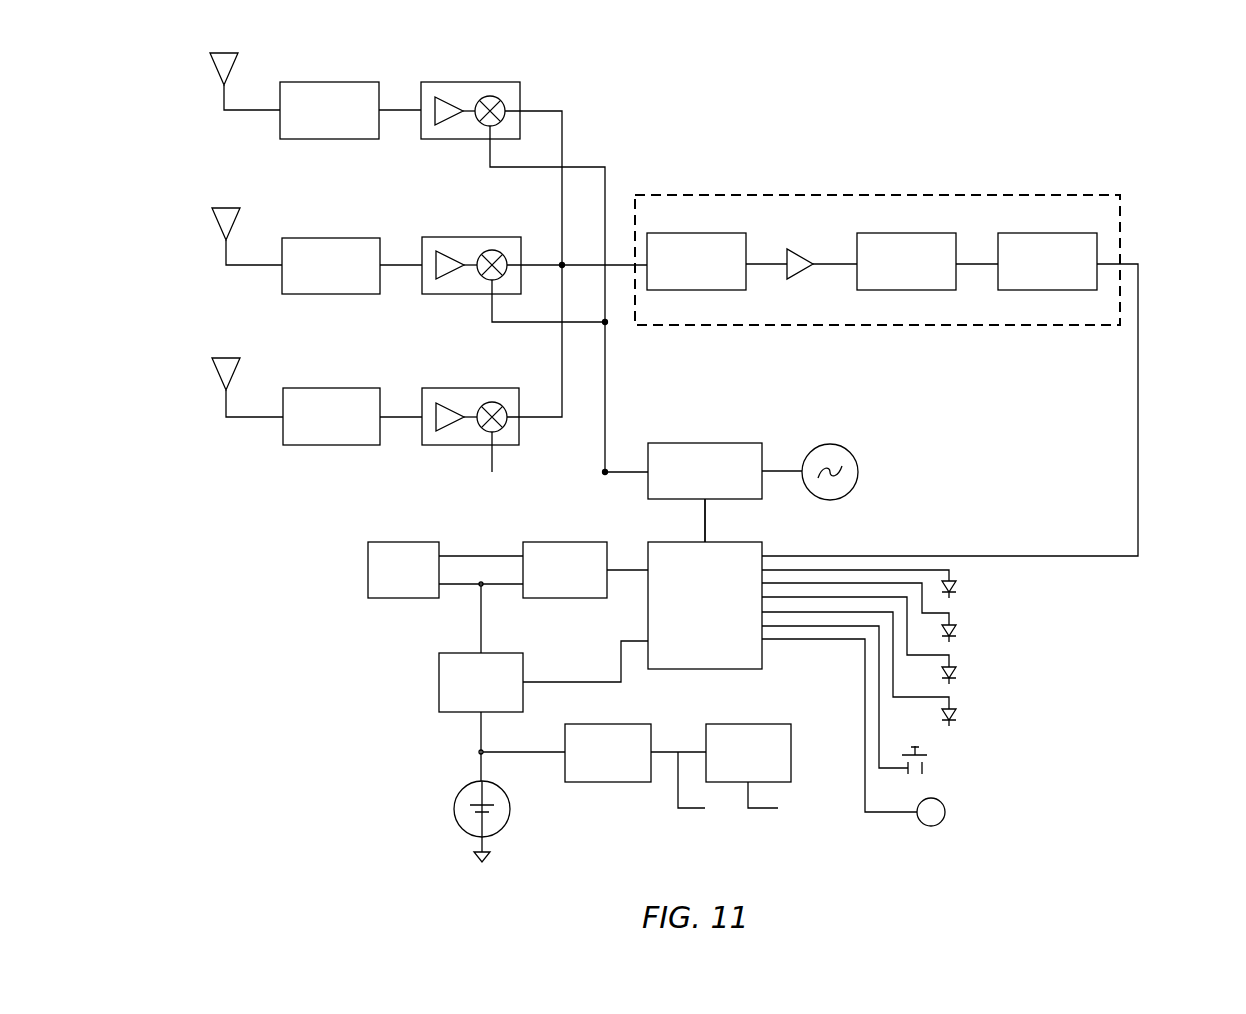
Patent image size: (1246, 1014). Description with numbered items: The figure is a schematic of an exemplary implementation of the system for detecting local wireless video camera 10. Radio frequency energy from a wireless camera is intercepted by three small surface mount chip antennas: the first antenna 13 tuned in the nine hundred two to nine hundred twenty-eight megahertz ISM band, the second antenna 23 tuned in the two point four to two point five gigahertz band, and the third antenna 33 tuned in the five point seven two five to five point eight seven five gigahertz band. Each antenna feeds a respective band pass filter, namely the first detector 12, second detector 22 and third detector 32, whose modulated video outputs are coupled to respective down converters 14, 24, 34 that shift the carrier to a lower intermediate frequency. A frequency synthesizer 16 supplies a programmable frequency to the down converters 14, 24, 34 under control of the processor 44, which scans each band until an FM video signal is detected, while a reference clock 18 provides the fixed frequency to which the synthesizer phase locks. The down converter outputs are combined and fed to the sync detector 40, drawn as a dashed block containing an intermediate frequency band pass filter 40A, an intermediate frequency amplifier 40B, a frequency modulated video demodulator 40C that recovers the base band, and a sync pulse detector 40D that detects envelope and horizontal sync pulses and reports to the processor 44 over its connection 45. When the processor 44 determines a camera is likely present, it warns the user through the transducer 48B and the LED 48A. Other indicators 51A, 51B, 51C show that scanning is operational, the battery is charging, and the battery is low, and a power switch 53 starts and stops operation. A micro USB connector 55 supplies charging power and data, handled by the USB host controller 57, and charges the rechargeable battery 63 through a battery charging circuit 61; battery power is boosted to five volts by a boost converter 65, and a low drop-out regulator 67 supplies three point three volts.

The system for detecting local wireless video camera 10 is at (1157, 125).
The first detector 12 is at (300, 82).
The first antenna 13 is at (213, 70).
The down converter 14 is at (480, 82).
The frequency synthesizer 16 is at (700, 443).
The reference clock 18 is at (830, 445).
The second detector 22 is at (300, 238).
The second antenna 23 is at (226, 208).
The down converter 24 is at (480, 237).
The third detector 32 is at (300, 388).
The third antenna 33 is at (226, 358).
The down converter 34 is at (480, 388).
The sync detector 40 is at (1005, 195).
The intermediate frequency band pass filter 40A is at (696, 261).
The intermediate frequency amplifier 40B is at (805, 249).
The frequency modulated video demodulator 40C is at (906, 261).
The sync pulse detector 40D is at (1047, 261).
The processor 44 is at (719, 604).
The connection between signal processor and controller 45 is at (705, 532).
The LED 48A is at (957, 717).
The transducer 48B is at (945, 808).
The indicator LED 51A is at (957, 589).
The indicator LED 51B is at (957, 633).
The indicator LED 51C is at (957, 675).
The power switch 53 is at (927, 755).
The micro USB connector 55 is at (368, 556).
The USB host controller 57 is at (557, 542).
The battery charging circuit 61 is at (439, 690).
The rechargeable battery 63 is at (455, 805).
The boost converter 65 is at (588, 782).
The low drop-out regulator 67 is at (770, 724).